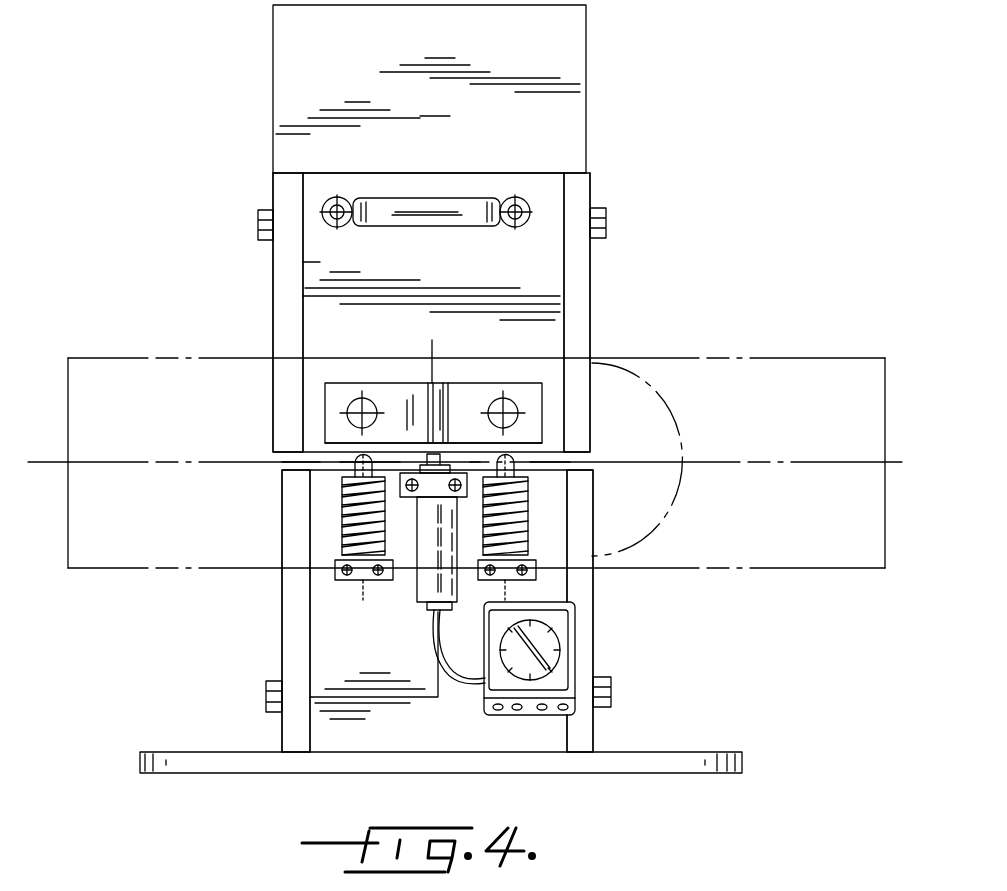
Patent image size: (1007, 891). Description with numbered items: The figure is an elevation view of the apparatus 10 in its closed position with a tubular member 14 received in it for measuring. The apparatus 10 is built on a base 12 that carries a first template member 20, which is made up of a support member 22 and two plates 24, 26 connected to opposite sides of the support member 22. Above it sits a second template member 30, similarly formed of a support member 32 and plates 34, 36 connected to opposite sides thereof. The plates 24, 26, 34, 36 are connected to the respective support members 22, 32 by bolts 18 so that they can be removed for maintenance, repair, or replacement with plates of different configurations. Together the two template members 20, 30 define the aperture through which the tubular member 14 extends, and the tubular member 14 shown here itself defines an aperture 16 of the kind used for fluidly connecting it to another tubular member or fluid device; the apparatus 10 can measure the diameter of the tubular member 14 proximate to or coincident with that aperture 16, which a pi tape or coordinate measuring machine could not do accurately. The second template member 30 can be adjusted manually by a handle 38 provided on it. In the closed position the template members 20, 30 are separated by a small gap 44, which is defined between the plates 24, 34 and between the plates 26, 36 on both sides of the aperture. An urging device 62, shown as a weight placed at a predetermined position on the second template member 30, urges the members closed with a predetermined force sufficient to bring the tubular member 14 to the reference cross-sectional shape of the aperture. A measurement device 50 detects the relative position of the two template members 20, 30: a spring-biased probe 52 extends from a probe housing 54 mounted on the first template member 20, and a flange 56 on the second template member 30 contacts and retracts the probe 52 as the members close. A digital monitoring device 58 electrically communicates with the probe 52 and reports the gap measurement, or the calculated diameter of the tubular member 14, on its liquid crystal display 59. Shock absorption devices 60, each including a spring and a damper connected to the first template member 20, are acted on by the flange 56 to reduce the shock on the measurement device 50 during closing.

The apparatus 10 is at (222, 72).
The base 12 is at (718, 752).
The tubular member 14 is at (812, 356).
The aperture 16 is at (662, 404).
The bolts 18 is at (258, 222).
The first template member 20 is at (608, 658).
The support member 22 is at (380, 750).
The plate 24 is at (582, 590).
The plate 26 is at (288, 592).
The second template member 30 is at (606, 184).
The support member 32 is at (325, 265).
The plate 34 is at (578, 305).
The plate 36 is at (285, 328).
The handle 38 is at (446, 202).
The gap 44 is at (277, 463).
The measurement device 50 is at (365, 598).
The probe 52 is at (440, 462).
The probe housing 54 is at (424, 588).
The flange 56 is at (386, 442).
The digital monitoring device 58 is at (552, 718).
The liquid crystal display 59 is at (548, 640).
The shock absorption devices 60 is at (340, 502).
The urging device 62 is at (565, 47).